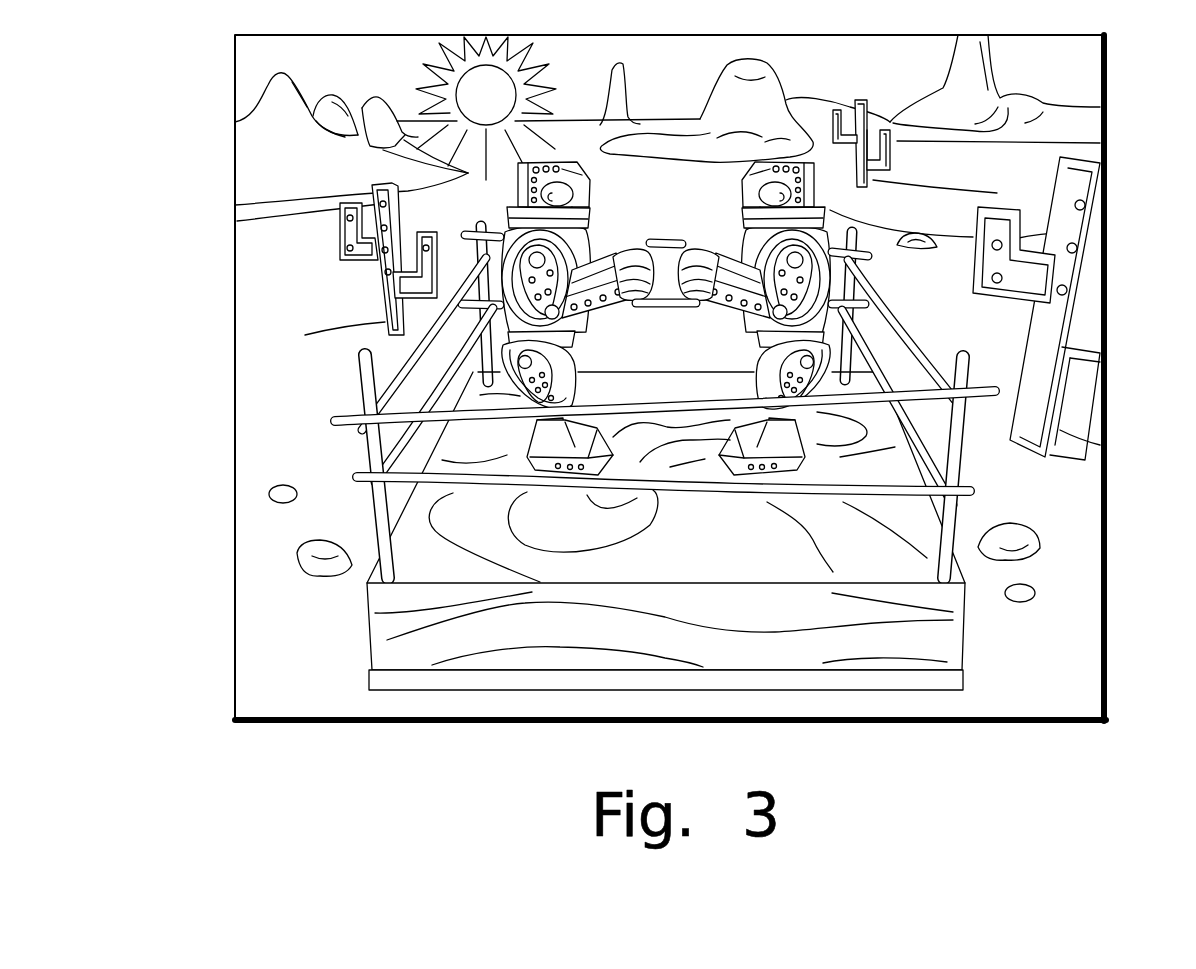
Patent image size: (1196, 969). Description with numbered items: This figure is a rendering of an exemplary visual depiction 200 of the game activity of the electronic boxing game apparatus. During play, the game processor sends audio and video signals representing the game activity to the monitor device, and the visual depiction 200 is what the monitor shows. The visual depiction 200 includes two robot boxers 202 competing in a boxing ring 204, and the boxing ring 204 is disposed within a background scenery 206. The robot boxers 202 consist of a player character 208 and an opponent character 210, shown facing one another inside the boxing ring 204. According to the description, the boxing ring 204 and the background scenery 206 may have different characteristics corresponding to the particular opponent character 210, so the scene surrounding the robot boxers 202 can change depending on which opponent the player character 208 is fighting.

The visual depiction 200 is at (1096, 67).
The robot boxers 202 is at (590, 176).
The boxing ring 204 is at (910, 575).
The background scenery 206 is at (268, 220).
The player character 208 is at (574, 356).
The opponent character 210 is at (758, 356).